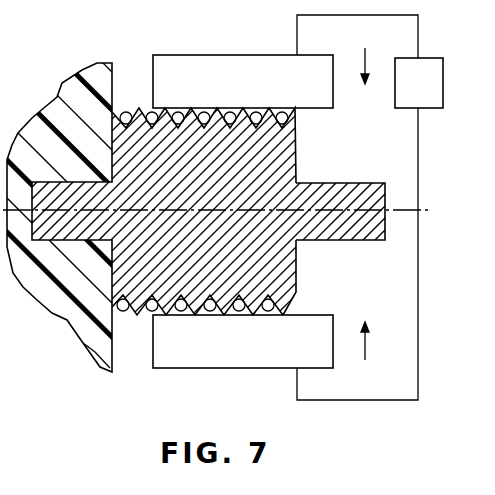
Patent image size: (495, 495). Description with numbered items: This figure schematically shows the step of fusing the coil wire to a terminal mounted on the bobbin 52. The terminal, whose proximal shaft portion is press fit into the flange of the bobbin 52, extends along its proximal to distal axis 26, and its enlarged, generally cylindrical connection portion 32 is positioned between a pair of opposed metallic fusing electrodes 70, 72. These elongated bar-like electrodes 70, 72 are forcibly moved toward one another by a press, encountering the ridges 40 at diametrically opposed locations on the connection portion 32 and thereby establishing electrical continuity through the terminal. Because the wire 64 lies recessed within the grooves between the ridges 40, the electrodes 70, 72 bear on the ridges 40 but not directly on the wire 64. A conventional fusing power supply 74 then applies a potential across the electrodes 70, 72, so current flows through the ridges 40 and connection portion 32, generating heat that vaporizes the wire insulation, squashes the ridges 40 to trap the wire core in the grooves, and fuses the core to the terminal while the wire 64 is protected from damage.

The proximal to distal axis 26 is at (401, 209).
The connection portion 32 is at (296, 275).
The ridges 40 is at (190, 108).
The bobbin 52 is at (98, 60).
The wire 64 is at (237, 311).
The fusing electrode 70 is at (272, 345).
The fusing electrode 72 is at (215, 78).
The fusing power supply 74 is at (410, 90).